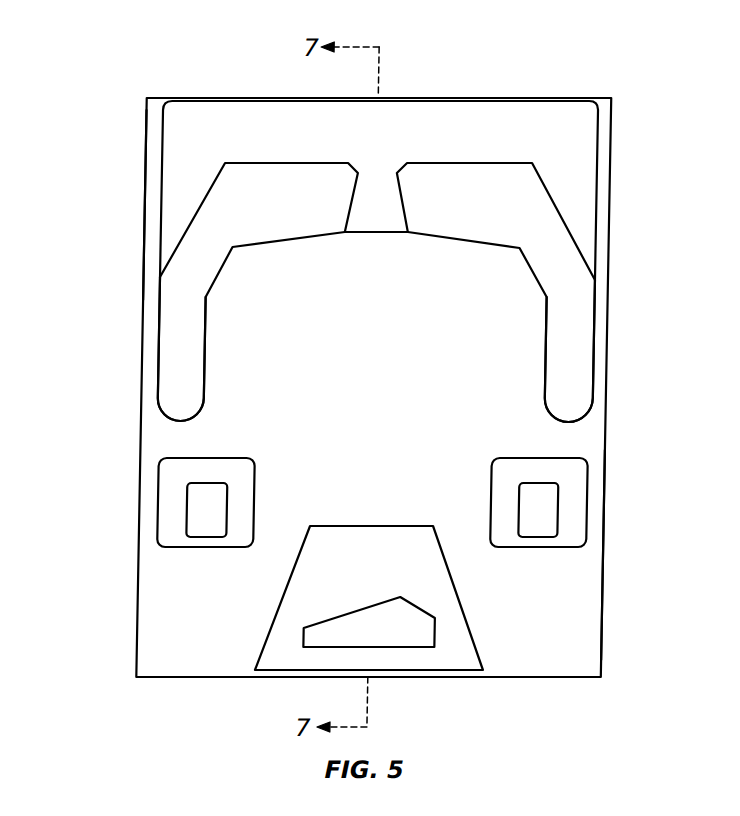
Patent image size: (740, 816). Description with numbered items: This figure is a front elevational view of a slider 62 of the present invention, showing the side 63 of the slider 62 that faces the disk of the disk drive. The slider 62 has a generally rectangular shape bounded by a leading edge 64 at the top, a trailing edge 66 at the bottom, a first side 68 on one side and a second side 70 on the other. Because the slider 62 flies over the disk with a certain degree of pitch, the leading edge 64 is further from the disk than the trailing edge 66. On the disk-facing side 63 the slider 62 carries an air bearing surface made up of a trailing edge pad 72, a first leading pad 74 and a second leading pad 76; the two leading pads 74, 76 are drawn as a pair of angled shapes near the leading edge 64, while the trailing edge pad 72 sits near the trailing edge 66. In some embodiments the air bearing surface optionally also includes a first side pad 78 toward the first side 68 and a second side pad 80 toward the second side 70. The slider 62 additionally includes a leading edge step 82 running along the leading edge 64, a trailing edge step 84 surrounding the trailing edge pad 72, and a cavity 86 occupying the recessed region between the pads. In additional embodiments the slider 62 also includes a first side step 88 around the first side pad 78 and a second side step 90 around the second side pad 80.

The slider 62 is at (113, 77).
The side 63 is at (234, 322).
The leading edge 64 is at (291, 97).
The trailing edge 66 is at (549, 677).
The first side 68 is at (148, 153).
The second side 70 is at (613, 588).
The trailing edge pad 72 is at (426, 618).
The first leading pad 74 is at (232, 225).
The second leading pad 76 is at (529, 228).
The first side pad 78 is at (216, 512).
The second side pad 80 is at (557, 512).
The leading edge step 82 is at (485, 106).
The trailing edge step 84 is at (410, 540).
The cavity 86 is at (529, 322).
The first side step 88 is at (246, 467).
The second side step 90 is at (514, 470).